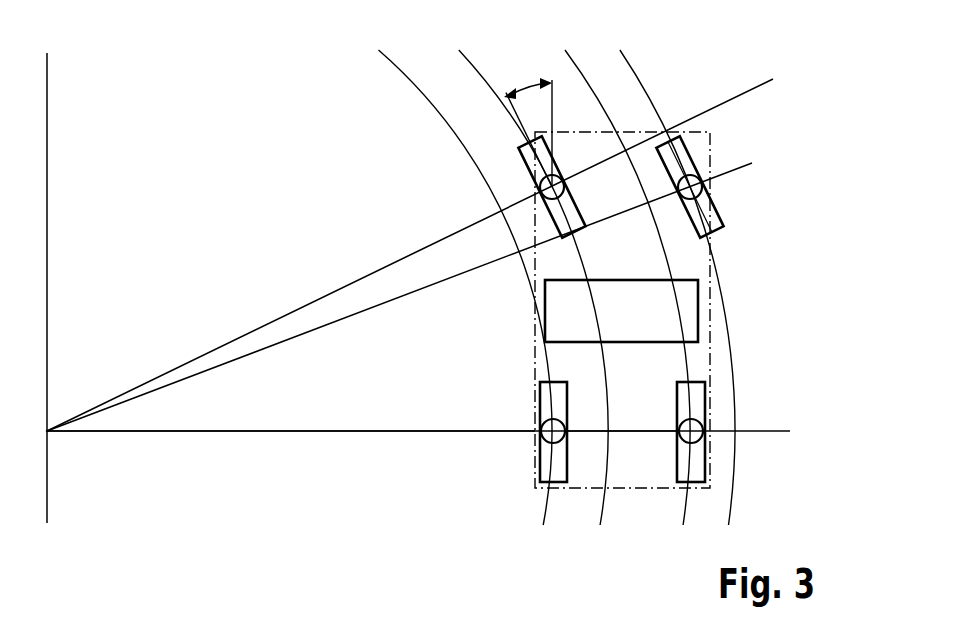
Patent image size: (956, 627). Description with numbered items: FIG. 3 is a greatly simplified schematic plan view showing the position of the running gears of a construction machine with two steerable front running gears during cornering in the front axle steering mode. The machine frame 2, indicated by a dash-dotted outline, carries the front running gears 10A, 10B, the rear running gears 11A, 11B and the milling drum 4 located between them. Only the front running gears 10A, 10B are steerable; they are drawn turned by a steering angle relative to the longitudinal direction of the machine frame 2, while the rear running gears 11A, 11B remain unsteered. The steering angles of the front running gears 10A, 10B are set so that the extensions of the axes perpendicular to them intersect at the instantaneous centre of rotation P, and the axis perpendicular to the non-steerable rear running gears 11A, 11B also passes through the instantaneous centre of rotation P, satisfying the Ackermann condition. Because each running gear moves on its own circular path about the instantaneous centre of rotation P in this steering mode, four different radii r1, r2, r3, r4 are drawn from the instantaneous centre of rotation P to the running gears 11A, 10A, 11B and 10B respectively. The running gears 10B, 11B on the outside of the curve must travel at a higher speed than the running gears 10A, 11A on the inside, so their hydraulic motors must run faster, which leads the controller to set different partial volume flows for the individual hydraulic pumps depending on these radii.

The machine frame 2 is at (712, 152).
The milling drum 4 is at (699, 310).
The front left running gear 10A is at (527, 162).
The front right running gear 10B is at (720, 212).
The rear left running gear 11A is at (538, 406).
The rear right running gear 11B is at (706, 399).
The instantaneous centre of rotation P is at (49, 429).
The first radius r1 is at (330, 432).
The second radius r2 is at (358, 280).
The third radius r3 is at (646, 432).
The fourth radius r4 is at (408, 298).